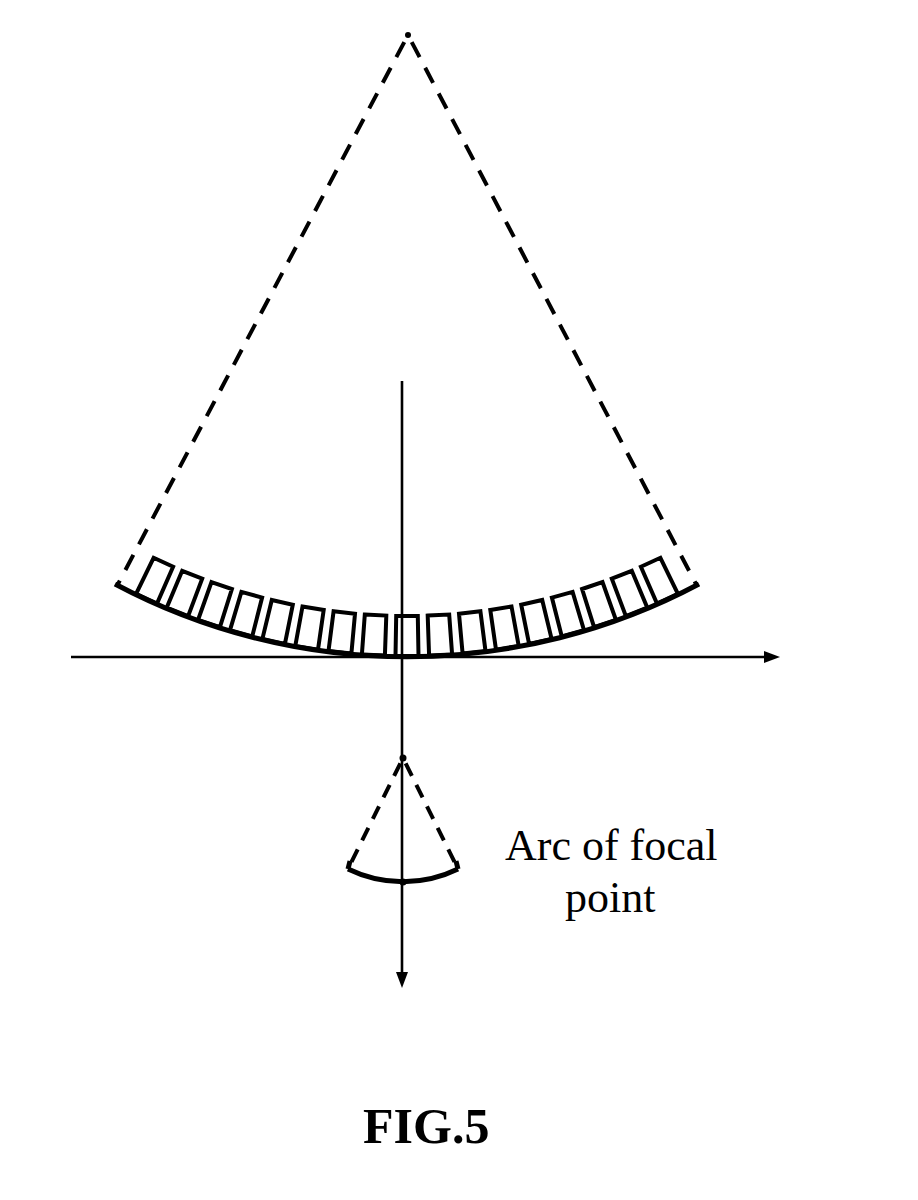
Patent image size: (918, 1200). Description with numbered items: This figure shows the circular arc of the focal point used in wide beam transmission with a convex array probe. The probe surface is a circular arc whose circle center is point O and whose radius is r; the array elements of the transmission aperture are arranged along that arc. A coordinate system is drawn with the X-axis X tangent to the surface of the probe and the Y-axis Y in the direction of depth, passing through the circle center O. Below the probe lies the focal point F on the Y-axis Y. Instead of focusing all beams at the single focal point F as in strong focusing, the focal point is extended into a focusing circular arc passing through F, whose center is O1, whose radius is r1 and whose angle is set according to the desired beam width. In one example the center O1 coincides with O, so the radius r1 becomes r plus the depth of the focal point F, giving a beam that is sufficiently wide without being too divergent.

The center of transducer arc O is at (286, 295).
The radius of transducer arc r is at (552, 309).
The X axis X is at (425, 682).
The Y axis Y is at (421, 684).
The center of arc of focal point O1 is at (436, 756).
The radius of arc of focal point r1 is at (443, 813).
The focal point F is at (403, 898).